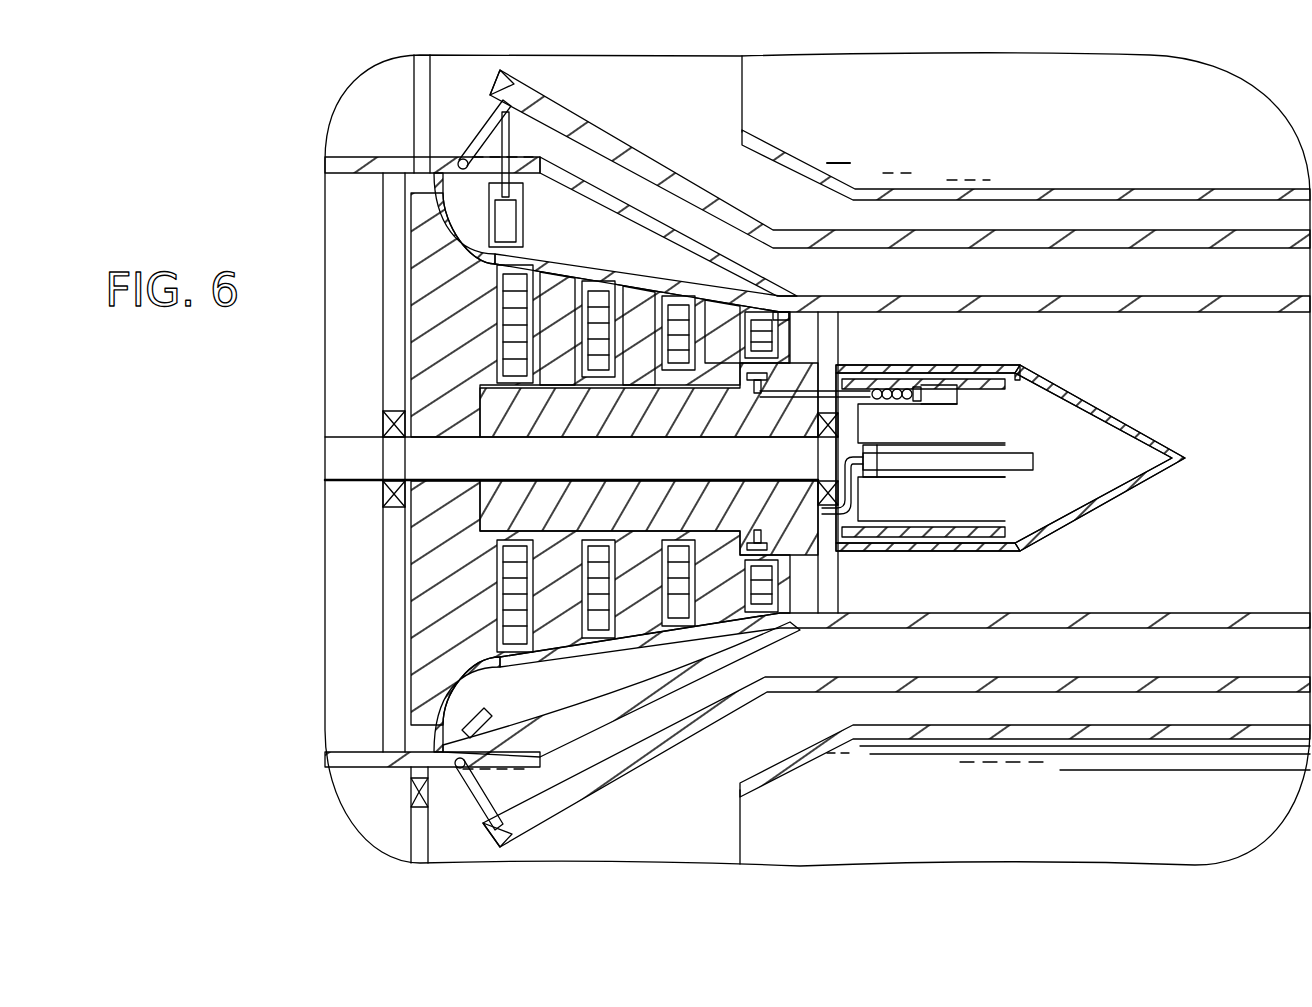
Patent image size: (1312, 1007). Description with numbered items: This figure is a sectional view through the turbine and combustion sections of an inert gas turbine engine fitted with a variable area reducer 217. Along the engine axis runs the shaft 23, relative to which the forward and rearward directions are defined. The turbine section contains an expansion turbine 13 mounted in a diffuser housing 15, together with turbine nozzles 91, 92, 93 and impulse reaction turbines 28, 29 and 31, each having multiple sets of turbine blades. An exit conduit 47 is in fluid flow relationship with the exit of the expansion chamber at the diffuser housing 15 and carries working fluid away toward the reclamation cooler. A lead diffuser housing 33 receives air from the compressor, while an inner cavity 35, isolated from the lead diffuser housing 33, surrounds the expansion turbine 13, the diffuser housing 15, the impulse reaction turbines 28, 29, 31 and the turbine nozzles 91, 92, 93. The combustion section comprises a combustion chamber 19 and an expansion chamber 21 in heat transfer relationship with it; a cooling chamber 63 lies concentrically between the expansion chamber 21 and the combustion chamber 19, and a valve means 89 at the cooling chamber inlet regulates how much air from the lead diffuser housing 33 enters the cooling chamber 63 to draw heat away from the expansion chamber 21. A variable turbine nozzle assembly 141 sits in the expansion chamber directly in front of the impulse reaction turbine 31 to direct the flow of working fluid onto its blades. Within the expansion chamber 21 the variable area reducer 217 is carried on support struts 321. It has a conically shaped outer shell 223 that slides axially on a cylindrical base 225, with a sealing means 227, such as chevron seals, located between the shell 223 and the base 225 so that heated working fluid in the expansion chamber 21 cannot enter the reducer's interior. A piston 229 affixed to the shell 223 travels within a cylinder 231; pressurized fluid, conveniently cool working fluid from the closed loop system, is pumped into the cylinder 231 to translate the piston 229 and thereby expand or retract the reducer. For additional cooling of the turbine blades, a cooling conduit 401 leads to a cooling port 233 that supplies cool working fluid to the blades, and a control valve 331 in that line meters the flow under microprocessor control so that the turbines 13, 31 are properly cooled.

The expansion turbine 13 is at (427, 543).
The diffuser housing 15 is at (396, 208).
The combustion chamber 19 is at (1033, 153).
The expansion chamber 21 is at (1260, 572).
The shaft 23 is at (345, 447).
The impulse reaction turbine 28 is at (551, 279).
The impulse reaction turbine 29 is at (639, 293).
The impulse reaction turbine 31 is at (726, 316).
The lead diffuser housing 33 is at (600, 101).
The inner cavity 35 is at (453, 238).
The exit conduit 47 is at (418, 99).
The cooling chamber 63 is at (1136, 284).
The valve means 89 is at (477, 139).
The turbine nozzle 91 is at (521, 258).
The turbine nozzle 92 is at (585, 274).
The turbine nozzle 93 is at (688, 314).
The variable turbine nozzle assembly 141 is at (779, 318).
The variable area reducer 217 is at (1025, 437).
The outer shell 223 is at (1093, 403).
The cylindrical base 225 is at (993, 385).
The sealing means 227 is at (930, 380).
The piston 229 is at (912, 460).
The cylinder 231 is at (961, 475).
The cooling port 233 is at (488, 716).
The support struts 321 is at (824, 590).
The control valve 331 is at (418, 796).
The cooling conduit 401 is at (412, 838).